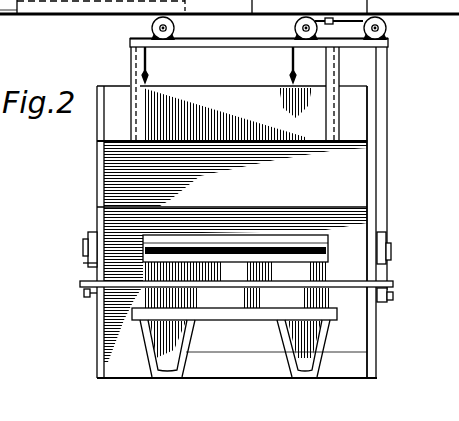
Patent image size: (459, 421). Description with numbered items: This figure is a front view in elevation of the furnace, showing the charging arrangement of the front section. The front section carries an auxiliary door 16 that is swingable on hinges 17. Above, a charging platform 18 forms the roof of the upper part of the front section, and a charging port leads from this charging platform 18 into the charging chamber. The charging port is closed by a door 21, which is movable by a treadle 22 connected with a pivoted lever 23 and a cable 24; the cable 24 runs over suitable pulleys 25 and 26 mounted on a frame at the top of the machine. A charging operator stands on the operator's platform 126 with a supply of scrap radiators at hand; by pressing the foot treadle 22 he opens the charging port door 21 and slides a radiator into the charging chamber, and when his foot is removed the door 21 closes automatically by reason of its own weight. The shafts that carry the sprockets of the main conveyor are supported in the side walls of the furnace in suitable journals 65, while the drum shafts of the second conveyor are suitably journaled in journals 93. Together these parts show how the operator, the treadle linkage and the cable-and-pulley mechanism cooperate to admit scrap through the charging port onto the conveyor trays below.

The journals 93 is at (130, 1).
The pulley 26 is at (152, 28).
The pulley 25 is at (387, 30).
The cable 24 is at (201, 26).
The door 21 is at (310, 108).
The charging platform 18 is at (351, 140).
The hinges 17 is at (313, 242).
The journals 65 is at (91, 237).
The treadle 22 is at (352, 281).
The pivoted lever 23 is at (391, 302).
The auxiliary door 16 is at (330, 302).
The operator's platform 126 is at (216, 318).